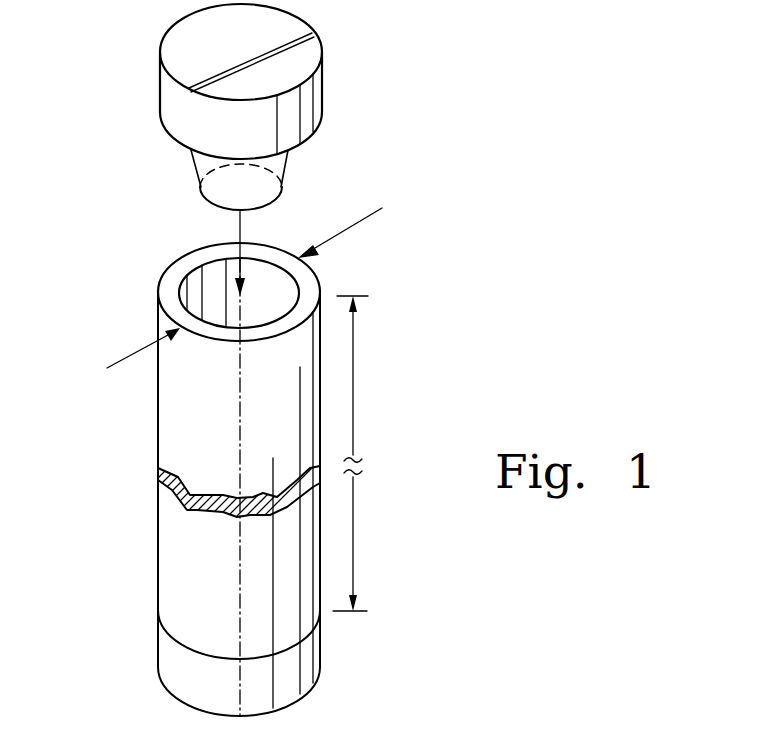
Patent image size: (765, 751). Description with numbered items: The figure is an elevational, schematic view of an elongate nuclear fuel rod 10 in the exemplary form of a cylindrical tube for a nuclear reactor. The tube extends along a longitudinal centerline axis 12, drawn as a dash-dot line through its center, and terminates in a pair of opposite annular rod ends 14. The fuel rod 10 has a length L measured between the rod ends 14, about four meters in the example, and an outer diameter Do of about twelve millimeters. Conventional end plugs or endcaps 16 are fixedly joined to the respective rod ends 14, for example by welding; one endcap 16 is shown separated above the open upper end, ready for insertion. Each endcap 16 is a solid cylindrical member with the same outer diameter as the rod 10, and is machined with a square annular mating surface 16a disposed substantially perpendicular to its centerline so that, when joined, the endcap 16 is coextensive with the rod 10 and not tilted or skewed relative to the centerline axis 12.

The nuclear fuel rod 10 is at (155, 505).
The longitudinal centerline axis 12 is at (238, 570).
The annular rod ends 14 is at (164, 279).
The endcap 16 is at (324, 80).
The square annular mating surface 16a is at (167, 137).
The outer diameter Do is at (355, 227).
The length L is at (354, 397).